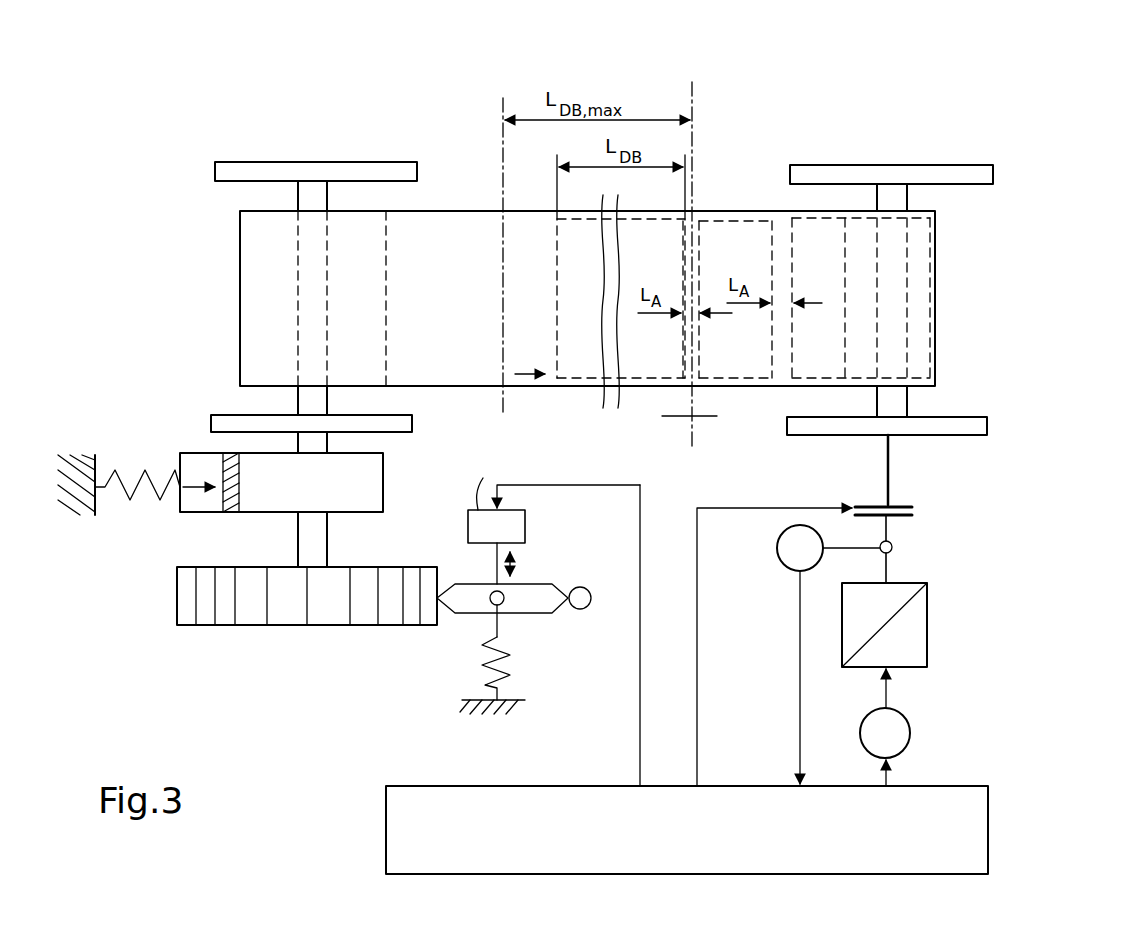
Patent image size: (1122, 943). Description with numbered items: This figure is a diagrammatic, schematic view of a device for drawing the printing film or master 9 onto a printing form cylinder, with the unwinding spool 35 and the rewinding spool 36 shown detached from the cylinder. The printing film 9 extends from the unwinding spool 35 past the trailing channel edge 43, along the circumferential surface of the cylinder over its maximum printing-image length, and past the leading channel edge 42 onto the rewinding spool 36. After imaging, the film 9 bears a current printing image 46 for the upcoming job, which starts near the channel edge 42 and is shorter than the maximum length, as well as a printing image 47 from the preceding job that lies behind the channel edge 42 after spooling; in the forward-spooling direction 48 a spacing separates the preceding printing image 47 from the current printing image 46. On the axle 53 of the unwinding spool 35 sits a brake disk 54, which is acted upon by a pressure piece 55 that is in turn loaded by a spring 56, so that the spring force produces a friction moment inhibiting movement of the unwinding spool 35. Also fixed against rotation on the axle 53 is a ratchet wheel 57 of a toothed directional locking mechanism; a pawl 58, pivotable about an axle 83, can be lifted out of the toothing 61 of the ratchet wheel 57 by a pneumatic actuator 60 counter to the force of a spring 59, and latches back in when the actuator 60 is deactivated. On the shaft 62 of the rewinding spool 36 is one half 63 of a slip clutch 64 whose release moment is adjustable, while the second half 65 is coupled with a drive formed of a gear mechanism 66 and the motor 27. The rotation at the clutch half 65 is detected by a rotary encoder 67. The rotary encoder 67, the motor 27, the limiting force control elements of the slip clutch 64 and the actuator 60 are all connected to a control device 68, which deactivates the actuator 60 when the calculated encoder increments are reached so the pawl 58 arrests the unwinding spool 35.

The printing film 9 is at (657, 388).
The motor 27 is at (910, 728).
The unwinding spool 35 is at (240, 170).
The rewinding spool 36 is at (968, 173).
The leading channel edge 42 is at (695, 97).
The trailing channel edge 43 is at (501, 112).
The printing image 46 is at (702, 262).
The preceding printing image 47 is at (752, 218).
The forward-spooling direction 48 is at (517, 374).
The axle 53 is at (297, 402).
The brake disk 54 is at (372, 480).
The pressure piece 55 is at (196, 505).
The spring 56 is at (137, 473).
The ratchet wheel 57 is at (185, 628).
The pawl 58 is at (525, 600).
The spring 59 is at (484, 670).
The pneumatic actuator 60 is at (525, 525).
The toothing 61 is at (306, 607).
The shaft 62 is at (890, 463).
The clutch half 63 is at (912, 497).
The slip clutch 64 is at (932, 513).
The second clutch half 65 is at (905, 517).
The gear mechanism 66 is at (912, 633).
The rotary encoder 67 is at (785, 560).
The control device 68 is at (968, 832).
The axle 83 is at (582, 609).